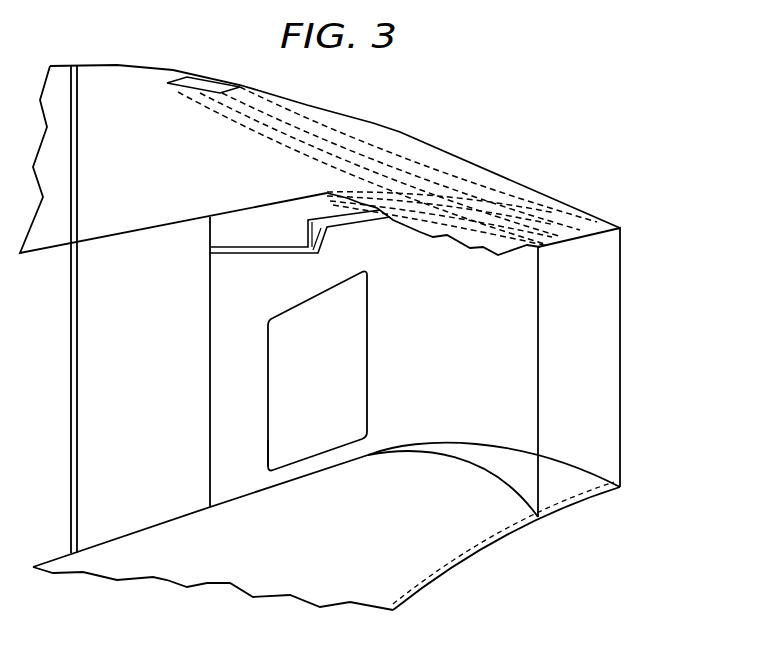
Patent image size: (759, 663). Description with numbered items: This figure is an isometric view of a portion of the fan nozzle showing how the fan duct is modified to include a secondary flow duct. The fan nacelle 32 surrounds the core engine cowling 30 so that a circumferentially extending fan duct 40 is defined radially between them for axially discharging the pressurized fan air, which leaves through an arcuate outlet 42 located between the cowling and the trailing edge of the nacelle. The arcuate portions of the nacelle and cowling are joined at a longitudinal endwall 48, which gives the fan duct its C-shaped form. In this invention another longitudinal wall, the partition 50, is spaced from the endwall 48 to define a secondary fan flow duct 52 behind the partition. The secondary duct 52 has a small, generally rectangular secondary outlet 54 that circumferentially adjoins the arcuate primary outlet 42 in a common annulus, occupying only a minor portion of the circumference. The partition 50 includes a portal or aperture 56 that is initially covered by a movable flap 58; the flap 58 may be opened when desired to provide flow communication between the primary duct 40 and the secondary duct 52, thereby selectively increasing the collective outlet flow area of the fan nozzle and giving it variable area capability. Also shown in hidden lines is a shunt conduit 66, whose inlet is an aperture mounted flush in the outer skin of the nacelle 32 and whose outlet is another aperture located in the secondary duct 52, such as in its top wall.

The core engine cowling 30 is at (380, 560).
The fan nacelle 32 is at (176, 172).
The fan duct 40 is at (195, 563).
The arcuate outlet 42 is at (467, 553).
The endwall 48 is at (622, 385).
The partition 50 is at (464, 366).
The secondary fan flow duct 52 is at (603, 303).
The secondary outlet 54 is at (578, 483).
The aperture 56 is at (267, 438).
The flap 58 is at (327, 389).
The shunt conduit 66 is at (345, 133).